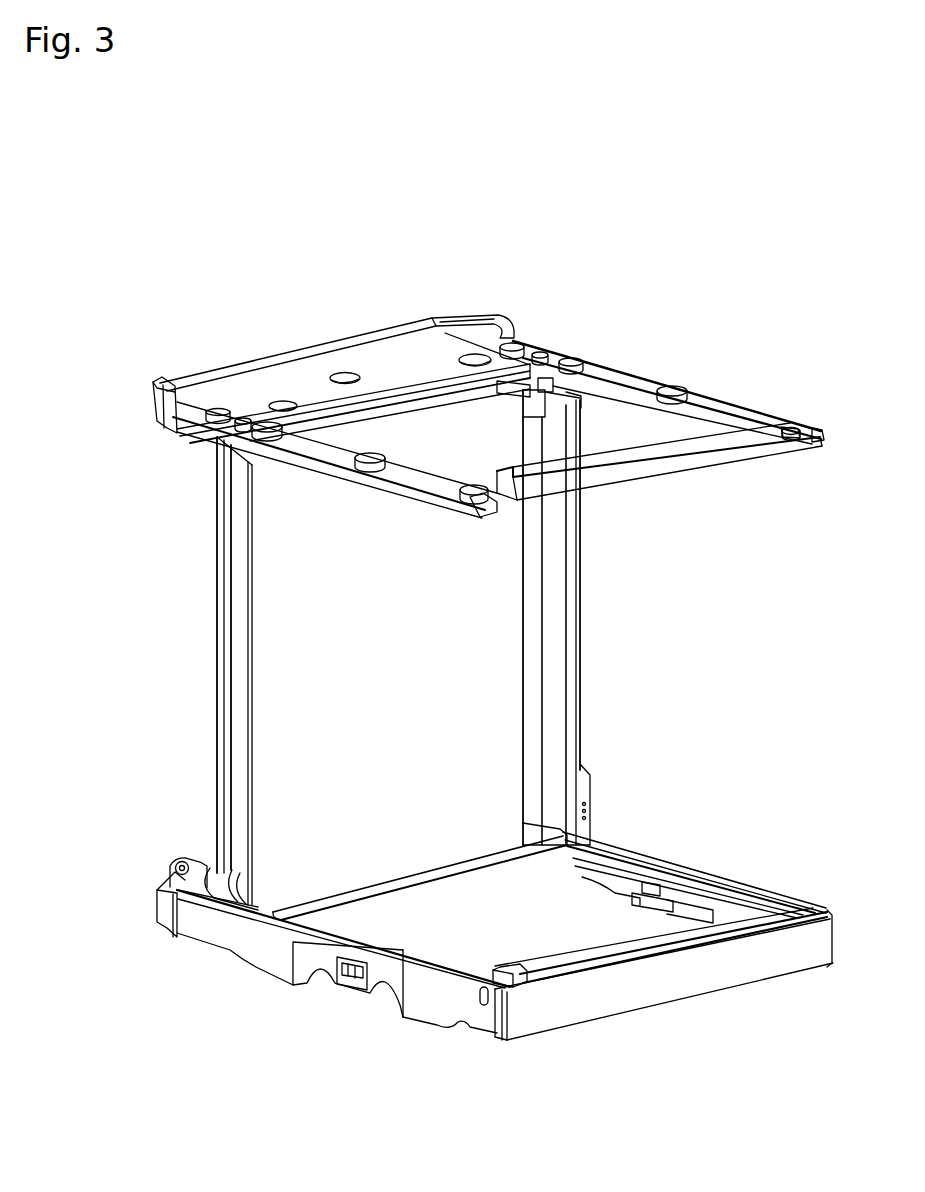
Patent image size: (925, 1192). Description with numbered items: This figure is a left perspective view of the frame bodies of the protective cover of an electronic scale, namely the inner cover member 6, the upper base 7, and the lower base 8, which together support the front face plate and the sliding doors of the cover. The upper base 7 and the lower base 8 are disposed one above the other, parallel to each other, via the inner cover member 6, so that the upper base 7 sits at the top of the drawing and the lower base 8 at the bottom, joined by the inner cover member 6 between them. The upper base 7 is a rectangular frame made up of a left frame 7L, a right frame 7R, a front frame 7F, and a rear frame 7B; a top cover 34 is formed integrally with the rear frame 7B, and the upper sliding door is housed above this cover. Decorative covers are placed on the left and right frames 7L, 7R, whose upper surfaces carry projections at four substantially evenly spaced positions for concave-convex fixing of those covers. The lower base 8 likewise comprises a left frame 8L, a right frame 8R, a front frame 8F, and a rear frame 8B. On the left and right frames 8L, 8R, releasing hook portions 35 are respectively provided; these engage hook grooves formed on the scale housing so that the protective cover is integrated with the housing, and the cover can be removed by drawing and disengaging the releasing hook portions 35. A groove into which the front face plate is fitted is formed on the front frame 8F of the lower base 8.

The inner cover member 6 is at (472, 695).
The upper base 7 is at (700, 343).
The rear frame 7B is at (158, 405).
The left frame 7L is at (396, 473).
The right frame 7R is at (597, 375).
The front frame 7F is at (654, 466).
The top cover 34 is at (347, 360).
The lower base 8 is at (751, 820).
The rear frame 8B is at (207, 872).
The left frame 8L is at (273, 952).
The right frame 8R is at (760, 897).
The front frame 8F is at (667, 977).
The releasing hook portion 35 is at (350, 987).